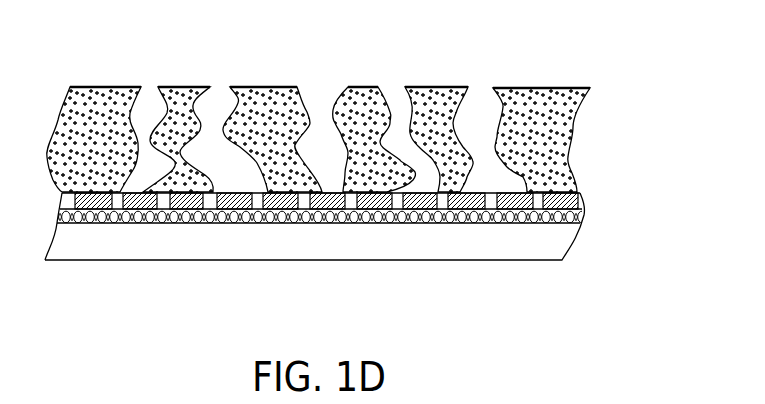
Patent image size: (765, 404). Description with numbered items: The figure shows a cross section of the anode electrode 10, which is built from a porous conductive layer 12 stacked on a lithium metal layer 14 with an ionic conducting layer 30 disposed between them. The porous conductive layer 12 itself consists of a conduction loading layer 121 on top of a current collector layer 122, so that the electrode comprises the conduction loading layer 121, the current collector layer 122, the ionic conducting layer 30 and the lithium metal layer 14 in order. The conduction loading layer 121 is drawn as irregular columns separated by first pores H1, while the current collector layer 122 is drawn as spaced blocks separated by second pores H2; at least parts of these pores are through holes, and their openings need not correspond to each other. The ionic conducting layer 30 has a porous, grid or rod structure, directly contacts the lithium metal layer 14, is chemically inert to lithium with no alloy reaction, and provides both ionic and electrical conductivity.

The anode electrode 10 is at (97, 69).
The porous conductive layer 12 is at (642, 128).
The conduction loading layer 121 is at (563, 131).
The current collector layer 122 is at (580, 200).
The ionic conducting layer 30 is at (581, 222).
The lithium metal layer 14 is at (572, 253).
The first pores H1 is at (480, 120).
The second pores H2 is at (257, 207).